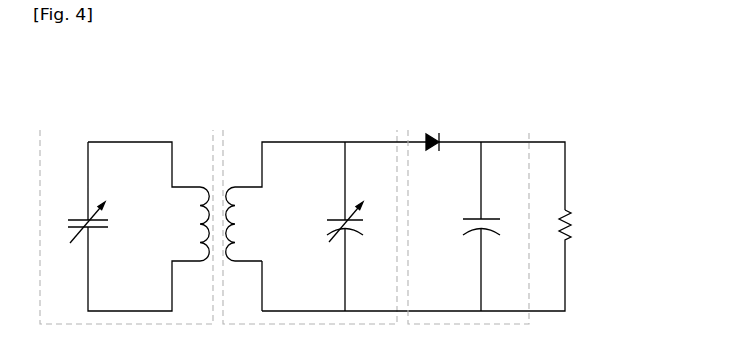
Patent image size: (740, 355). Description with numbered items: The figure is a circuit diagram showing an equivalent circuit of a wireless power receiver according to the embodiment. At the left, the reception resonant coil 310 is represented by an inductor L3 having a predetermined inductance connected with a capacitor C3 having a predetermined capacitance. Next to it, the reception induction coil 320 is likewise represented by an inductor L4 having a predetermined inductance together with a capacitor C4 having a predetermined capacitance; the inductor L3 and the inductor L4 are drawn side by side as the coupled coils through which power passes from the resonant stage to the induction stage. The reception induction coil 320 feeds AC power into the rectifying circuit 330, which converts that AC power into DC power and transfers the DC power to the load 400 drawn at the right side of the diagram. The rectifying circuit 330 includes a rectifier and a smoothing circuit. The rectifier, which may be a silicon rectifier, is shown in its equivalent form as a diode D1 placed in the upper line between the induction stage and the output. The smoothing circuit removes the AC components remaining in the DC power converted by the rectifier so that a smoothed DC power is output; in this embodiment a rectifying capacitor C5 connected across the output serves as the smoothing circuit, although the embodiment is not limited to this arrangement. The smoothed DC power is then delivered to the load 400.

The reception resonant coil 310 is at (126, 205).
The reception induction coil 320 is at (394, 205).
The rectifying circuit 330 is at (468, 205).
The load 400 is at (576, 212).
The capacitor C3 is at (77, 222).
The inductor L3 is at (190, 224).
The inductor L4 is at (246, 224).
The capacitor C4 is at (357, 226).
The diode D1 is at (433, 129).
The rectifying capacitor C5 is at (493, 226).